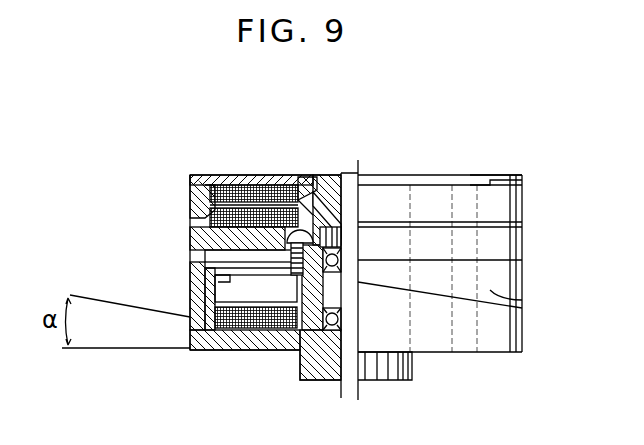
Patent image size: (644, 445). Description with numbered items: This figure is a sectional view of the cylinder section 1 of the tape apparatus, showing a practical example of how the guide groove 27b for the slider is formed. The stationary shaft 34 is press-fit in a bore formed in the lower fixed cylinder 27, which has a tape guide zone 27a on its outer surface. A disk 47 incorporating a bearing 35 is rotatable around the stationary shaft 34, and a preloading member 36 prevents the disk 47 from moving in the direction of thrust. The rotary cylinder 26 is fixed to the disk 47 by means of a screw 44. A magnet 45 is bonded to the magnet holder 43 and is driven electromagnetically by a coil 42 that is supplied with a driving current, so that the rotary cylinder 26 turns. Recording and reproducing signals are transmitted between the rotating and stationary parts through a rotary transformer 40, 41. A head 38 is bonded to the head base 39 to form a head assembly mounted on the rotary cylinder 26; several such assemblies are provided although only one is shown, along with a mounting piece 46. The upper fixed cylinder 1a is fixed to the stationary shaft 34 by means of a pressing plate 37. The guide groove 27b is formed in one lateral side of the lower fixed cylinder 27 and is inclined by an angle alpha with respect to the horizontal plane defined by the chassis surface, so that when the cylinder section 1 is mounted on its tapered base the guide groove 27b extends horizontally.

The cylinder section 1 is at (190, 200).
The rotor 1a is at (478, 175).
The rotary cylinder 26 is at (190, 232).
The lower fixed cylinder 27 is at (210, 350).
The tape guide zone 27a is at (488, 302).
The guide groove 27b is at (188, 322).
The stationary shaft 34 is at (348, 368).
The bearing 35 is at (340, 320).
The preloading member 36 is at (372, 190).
The pressing plate 37 is at (341, 178).
The head 38 is at (235, 262).
The head base 39 is at (233, 227).
The rotary transformer 40 is at (273, 215).
The rotary transformer 41 is at (220, 190).
The coil 42 is at (278, 332).
The magnet holder 43 is at (312, 343).
The screw 44 is at (300, 228).
The magnet 45 is at (215, 295).
The bracket 46 is at (228, 330).
The disk 47 is at (340, 292).